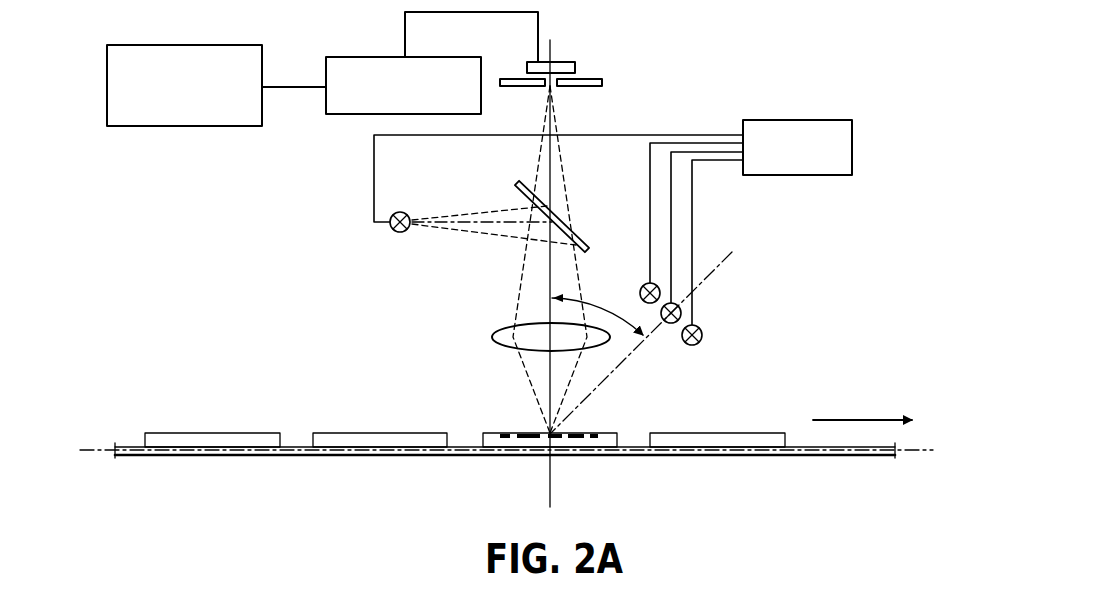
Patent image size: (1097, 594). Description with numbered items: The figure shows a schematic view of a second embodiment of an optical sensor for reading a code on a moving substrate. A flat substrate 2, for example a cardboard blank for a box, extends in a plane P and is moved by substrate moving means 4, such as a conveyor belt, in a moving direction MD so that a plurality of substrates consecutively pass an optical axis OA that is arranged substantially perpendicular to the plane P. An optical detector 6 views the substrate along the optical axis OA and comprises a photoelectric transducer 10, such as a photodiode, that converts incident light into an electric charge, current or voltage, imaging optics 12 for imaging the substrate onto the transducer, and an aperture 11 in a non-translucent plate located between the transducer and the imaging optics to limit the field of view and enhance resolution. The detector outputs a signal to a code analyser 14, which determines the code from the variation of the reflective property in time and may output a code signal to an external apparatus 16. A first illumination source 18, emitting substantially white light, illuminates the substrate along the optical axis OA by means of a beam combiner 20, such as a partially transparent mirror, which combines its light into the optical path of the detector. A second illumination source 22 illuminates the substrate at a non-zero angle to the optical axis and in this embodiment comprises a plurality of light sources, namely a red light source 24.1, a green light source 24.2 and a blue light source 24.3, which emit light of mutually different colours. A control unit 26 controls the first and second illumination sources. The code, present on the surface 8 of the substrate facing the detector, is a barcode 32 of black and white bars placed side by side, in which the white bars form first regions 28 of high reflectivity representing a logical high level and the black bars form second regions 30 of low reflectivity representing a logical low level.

The substrate 2 is at (225, 441).
The substrate moving means 4 is at (290, 447).
The optical detector 6 is at (605, 42).
The surface 8 is at (497, 433).
The photoelectric transducer 10 is at (560, 62).
The aperture 11 is at (553, 86).
The imaging optics 12 is at (492, 336).
The code analyser 14 is at (340, 57).
The external apparatus 16 is at (247, 45).
The first illumination source 18 is at (393, 229).
The beam combiner 20 is at (516, 184).
The second illumination source 22 is at (724, 292).
The red light source 24.1 is at (703, 335).
The green light source 24.2 is at (672, 325).
The blue light source 24.3 is at (645, 285).
The control unit 26 is at (854, 140).
The first region 28 is at (510, 432).
The second region 30 is at (588, 433).
The barcode 32 is at (532, 428).
The optical axis OA is at (552, 488).
The plane P is at (933, 449).
The moving direction MD is at (870, 420).